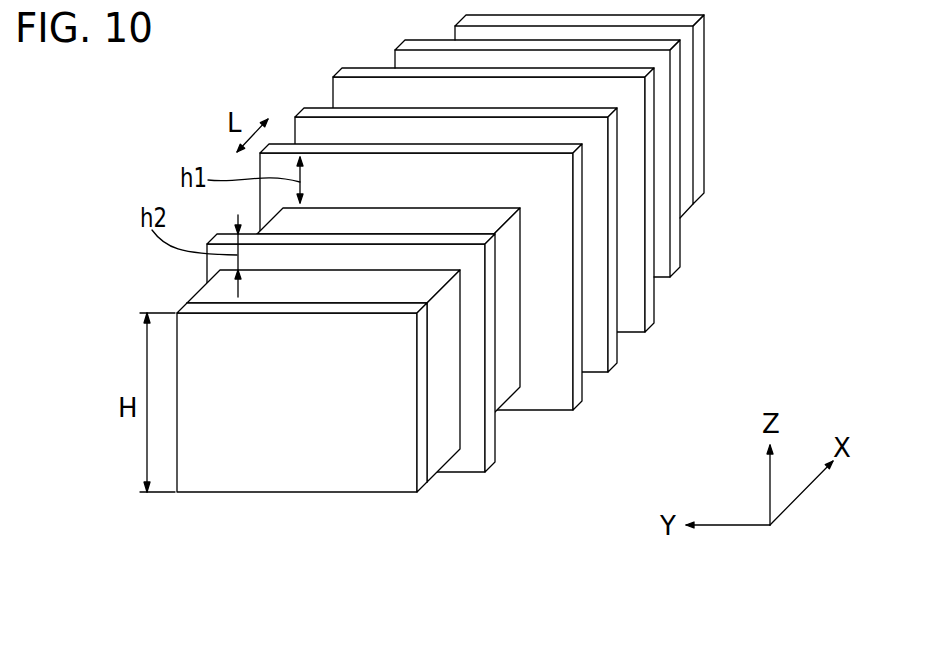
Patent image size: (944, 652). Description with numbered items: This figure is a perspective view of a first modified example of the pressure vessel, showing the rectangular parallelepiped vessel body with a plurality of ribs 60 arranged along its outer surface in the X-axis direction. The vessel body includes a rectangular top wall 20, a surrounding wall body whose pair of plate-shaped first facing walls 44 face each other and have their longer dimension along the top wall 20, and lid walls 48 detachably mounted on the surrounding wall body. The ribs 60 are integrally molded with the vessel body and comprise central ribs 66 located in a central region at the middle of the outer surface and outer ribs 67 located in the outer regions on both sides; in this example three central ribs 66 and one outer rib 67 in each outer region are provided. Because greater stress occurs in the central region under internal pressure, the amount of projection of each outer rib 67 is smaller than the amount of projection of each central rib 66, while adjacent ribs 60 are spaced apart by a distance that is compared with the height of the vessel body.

The top wall 20 is at (279, 419).
The first facing wall 44 is at (438, 458).
The lid wall 48 is at (381, 482).
The rib 60 is at (525, 243).
The central rib 66 is at (583, 408).
The outer rib 67 is at (675, 277).